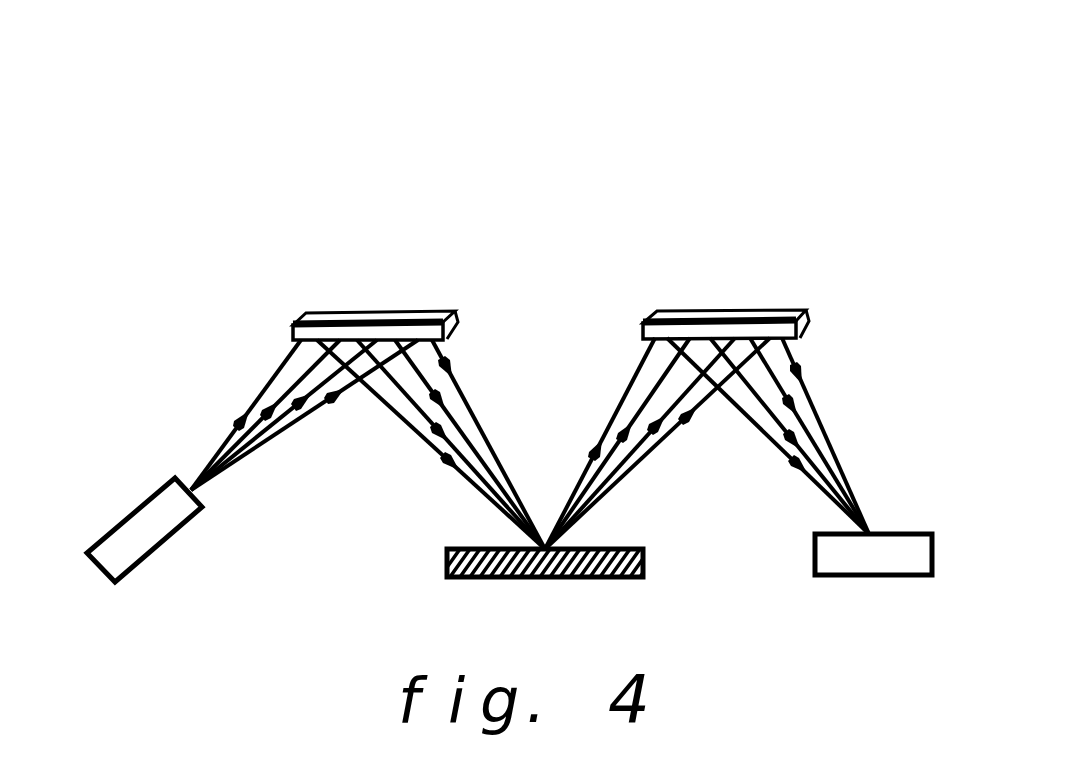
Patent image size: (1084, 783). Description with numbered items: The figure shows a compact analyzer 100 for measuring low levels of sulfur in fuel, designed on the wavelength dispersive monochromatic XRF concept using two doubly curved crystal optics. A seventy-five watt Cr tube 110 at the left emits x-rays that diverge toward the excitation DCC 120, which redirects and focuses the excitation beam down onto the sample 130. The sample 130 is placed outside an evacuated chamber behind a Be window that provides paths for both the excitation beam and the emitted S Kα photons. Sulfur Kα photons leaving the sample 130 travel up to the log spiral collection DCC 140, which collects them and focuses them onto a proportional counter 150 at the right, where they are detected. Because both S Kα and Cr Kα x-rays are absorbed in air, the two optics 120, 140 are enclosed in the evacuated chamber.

The compact analyzer 100 is at (585, 150).
The Cr tube 110 is at (128, 512).
The excitation DCC 120 is at (384, 312).
The sample 130 is at (447, 562).
The collection DCC 140 is at (724, 310).
The proportional counter 150 is at (815, 548).